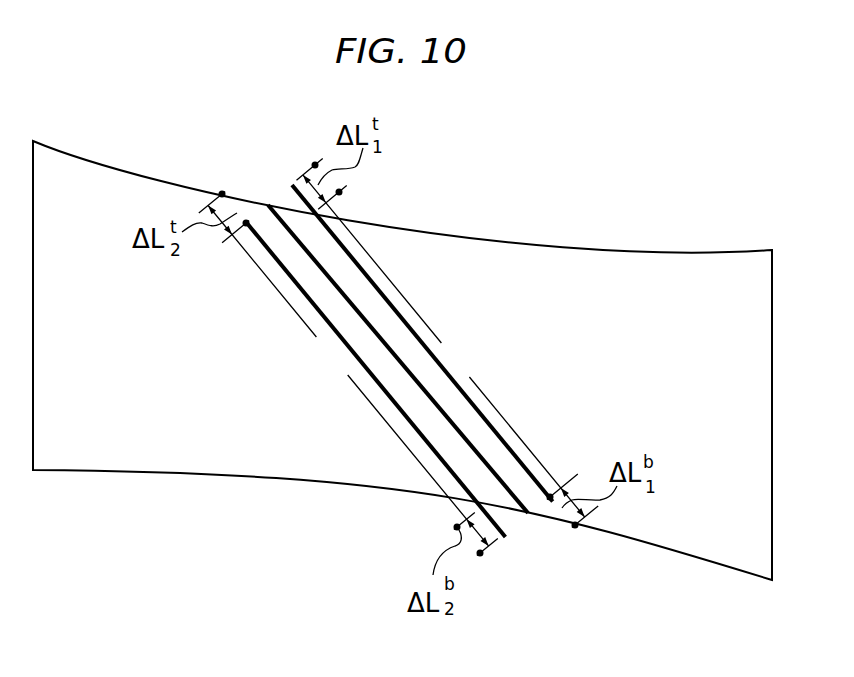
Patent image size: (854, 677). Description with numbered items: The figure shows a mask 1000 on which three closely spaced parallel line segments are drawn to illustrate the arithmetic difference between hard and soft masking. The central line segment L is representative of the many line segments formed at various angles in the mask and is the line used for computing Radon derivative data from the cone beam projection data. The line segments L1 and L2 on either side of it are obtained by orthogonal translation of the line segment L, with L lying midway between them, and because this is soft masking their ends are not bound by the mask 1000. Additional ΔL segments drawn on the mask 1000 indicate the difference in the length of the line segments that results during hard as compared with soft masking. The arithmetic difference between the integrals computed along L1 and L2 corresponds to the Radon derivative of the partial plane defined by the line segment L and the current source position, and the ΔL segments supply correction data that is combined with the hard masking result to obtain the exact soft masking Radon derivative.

The mask 1000 is at (693, 250).
The line segment L is at (403, 357).
The line segment L1 is at (422, 343).
The line segment L2 is at (375, 379).